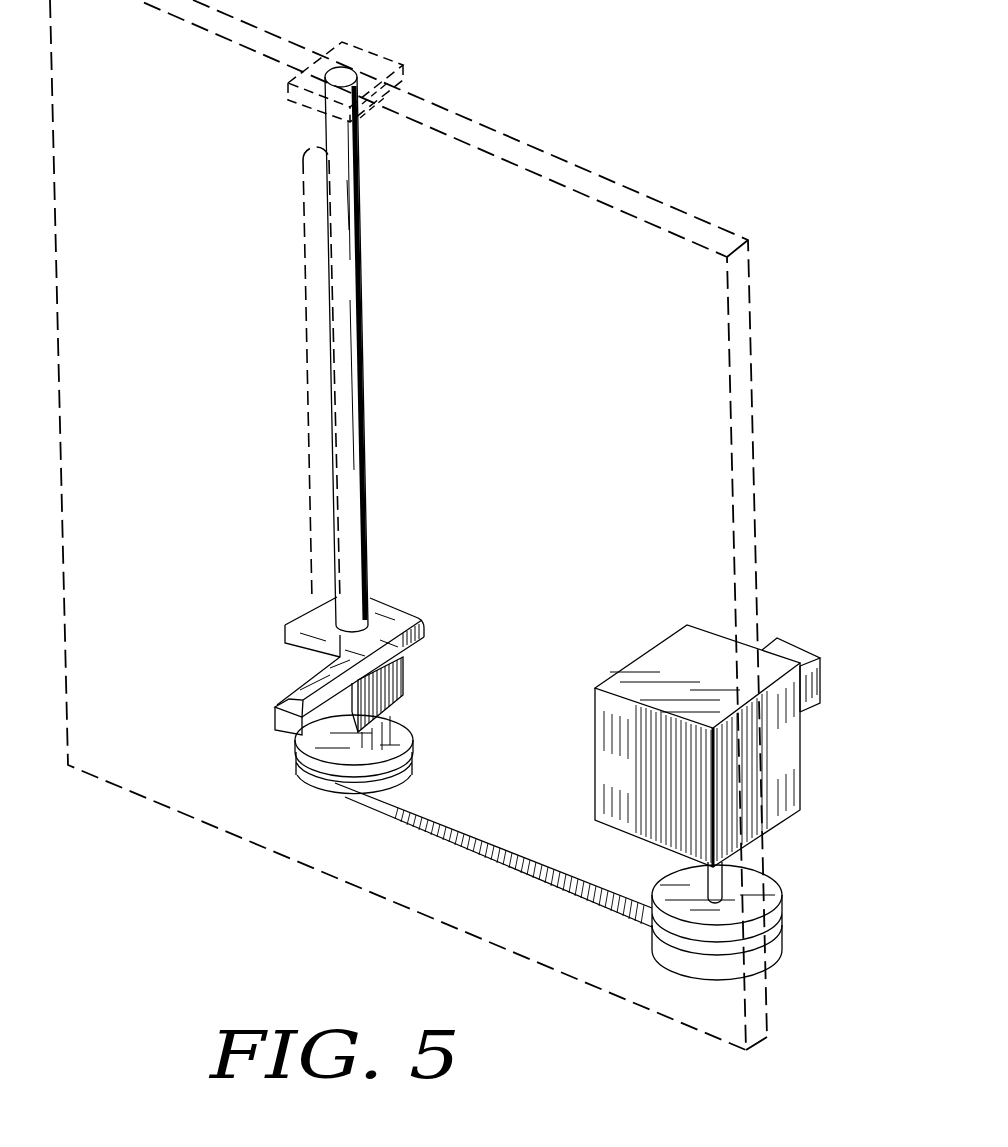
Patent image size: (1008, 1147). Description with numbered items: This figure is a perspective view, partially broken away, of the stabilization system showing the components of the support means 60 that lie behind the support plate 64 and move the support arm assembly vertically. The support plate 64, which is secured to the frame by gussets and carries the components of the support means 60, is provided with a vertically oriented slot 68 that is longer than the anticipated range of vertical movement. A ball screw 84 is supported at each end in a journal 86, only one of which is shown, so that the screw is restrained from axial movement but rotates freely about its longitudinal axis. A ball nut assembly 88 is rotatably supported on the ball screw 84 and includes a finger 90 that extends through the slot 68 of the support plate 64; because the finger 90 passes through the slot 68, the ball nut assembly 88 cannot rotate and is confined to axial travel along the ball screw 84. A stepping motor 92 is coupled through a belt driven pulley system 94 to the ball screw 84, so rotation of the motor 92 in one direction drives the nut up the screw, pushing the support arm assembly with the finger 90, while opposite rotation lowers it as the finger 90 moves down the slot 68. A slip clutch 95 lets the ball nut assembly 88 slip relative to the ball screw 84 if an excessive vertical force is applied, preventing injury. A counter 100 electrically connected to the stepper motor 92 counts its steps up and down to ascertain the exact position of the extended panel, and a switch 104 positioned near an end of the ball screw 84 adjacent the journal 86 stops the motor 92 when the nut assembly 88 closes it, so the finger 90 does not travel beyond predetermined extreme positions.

The support means 60 is at (630, 155).
The support plate 64 is at (752, 385).
The vertically oriented slot 68 is at (310, 333).
The ball screw 84 is at (358, 423).
The journal 86 is at (388, 62).
The ball nut assembly 88 is at (427, 641).
The finger 90 is at (293, 700).
The stepping motor 92 is at (778, 768).
The belt driven pulley system 94 is at (332, 803).
The slip clutch 95 is at (392, 690).
The counter 100 is at (822, 693).
The switch 104 is at (372, 120).